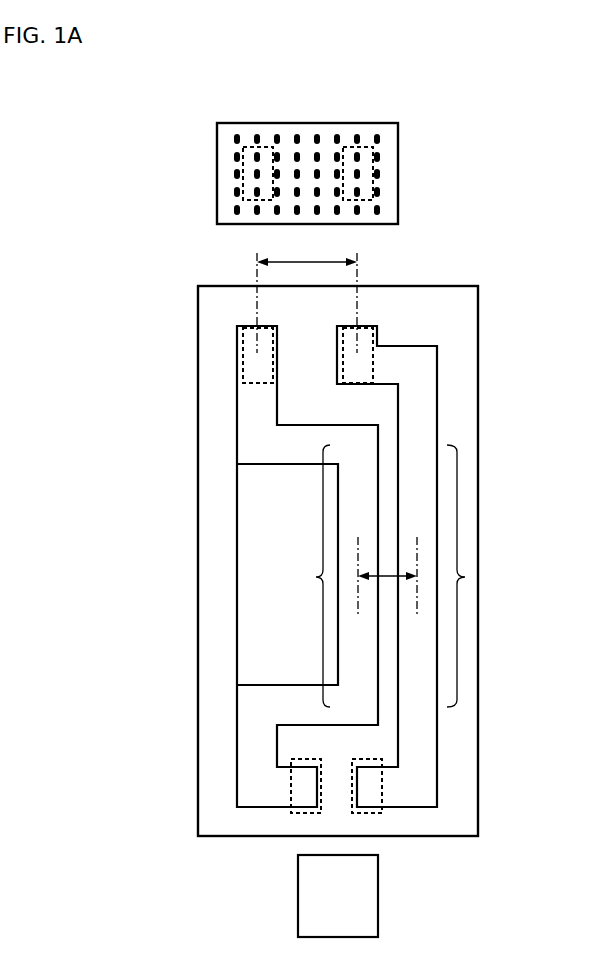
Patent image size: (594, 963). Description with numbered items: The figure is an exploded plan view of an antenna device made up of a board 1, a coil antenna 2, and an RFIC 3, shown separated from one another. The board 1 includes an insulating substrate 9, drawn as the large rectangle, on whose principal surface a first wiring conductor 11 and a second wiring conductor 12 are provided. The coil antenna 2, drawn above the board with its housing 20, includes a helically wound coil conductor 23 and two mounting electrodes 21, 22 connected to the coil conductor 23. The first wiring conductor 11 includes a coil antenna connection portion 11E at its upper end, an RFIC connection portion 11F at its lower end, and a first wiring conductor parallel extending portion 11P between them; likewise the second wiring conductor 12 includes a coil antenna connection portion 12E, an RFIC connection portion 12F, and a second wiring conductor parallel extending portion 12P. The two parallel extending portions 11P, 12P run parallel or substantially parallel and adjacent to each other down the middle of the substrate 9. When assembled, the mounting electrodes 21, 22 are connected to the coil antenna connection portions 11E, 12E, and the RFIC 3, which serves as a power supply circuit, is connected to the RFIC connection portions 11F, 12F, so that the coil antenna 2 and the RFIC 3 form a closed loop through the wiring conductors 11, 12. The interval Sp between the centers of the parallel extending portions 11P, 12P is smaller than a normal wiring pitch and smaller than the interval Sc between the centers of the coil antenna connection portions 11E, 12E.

The board 1 is at (379, 527).
The coil antenna 2 is at (346, 146).
The RFIC 3 is at (365, 913).
The insulating substrate 9 is at (468, 295).
The first wiring conductor 11 is at (253, 606).
The coil antenna connection portion 11E is at (248, 367).
The RFIC connection portion 11F is at (298, 815).
The first wiring conductor parallel extending portion 11P is at (297, 576).
The second wiring conductor 12 is at (443, 565).
The coil antenna connection portion 12E is at (367, 327).
The RFIC connection portion 12F is at (373, 815).
The second wiring conductor parallel extending portion 12P is at (465, 577).
The sensor housing 20 is at (397, 124).
The mounting electrode 21 is at (249, 142).
The mounting electrode 22 is at (368, 142).
The coil conductor 23 is at (302, 158).
The interval between coil antenna connection portions Sc is at (307, 295).
The interval between parallel extending portions Sp is at (387, 573).